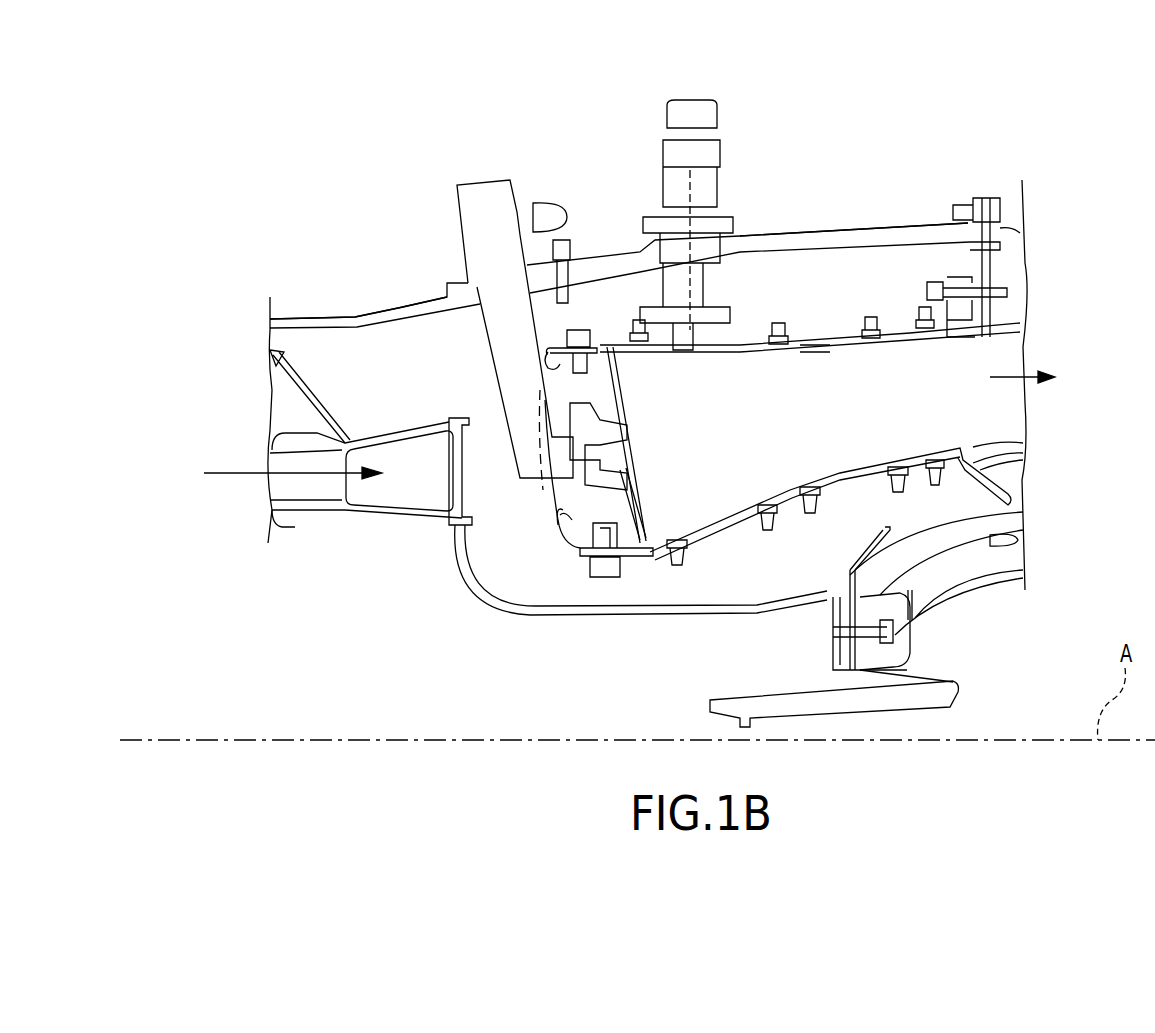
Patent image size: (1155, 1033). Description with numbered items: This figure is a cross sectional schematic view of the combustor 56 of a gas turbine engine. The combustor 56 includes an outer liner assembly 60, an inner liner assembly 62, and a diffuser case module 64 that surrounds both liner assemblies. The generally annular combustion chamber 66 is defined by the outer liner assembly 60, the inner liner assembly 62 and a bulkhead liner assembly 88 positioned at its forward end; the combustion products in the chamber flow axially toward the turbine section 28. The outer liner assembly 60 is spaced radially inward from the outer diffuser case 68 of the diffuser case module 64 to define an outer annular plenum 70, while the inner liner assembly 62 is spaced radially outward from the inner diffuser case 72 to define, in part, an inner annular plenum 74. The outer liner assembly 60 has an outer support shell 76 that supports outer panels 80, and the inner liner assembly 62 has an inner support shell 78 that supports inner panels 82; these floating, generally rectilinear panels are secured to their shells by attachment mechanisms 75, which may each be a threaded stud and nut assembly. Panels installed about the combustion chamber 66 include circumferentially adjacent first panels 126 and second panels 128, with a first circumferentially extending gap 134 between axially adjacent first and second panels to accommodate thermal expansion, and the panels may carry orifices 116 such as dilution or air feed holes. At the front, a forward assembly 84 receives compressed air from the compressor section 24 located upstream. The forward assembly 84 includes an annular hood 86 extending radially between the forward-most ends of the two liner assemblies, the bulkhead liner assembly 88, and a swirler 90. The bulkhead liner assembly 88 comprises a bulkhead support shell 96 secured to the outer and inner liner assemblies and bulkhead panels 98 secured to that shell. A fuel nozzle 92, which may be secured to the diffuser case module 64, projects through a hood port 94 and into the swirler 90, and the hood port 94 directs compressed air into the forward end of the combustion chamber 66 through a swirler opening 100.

The compressor section 24 is at (177, 491).
The turbine section 28 is at (1108, 396).
The combustor 56 is at (933, 152).
The outer liner assembly 60 is at (828, 320).
The inner liner assembly 62 is at (781, 520).
The diffuser case module 64 is at (873, 227).
The combustion chamber 66 is at (852, 423).
The outer diffuser case 68 is at (760, 233).
The outer annular plenum 70 is at (766, 292).
The inner diffuser case 72 is at (617, 620).
The inner annular plenum 74 is at (750, 595).
The attachment mechanism 75 is at (940, 482).
The outer support shell 76 is at (370, 314).
The inner support shell 78 is at (863, 487).
The outer panel 80 is at (422, 293).
The inner panel 82 is at (710, 523).
The forward assembly 84 is at (544, 566).
The annular hood 86 is at (560, 523).
The bulkhead liner assembly 88 is at (645, 386).
The swirler 90 is at (637, 470).
The fuel nozzle 92 is at (510, 268).
The hood port 94 is at (553, 513).
The bulkhead support shell 96 is at (570, 540).
The bulkhead panel 98 is at (640, 505).
The swirler opening 100 is at (630, 438).
The orifice 116 is at (827, 347).
The first panel 126 is at (760, 360).
The second panel 128 is at (860, 340).
The first circumferentially extending gap 134 is at (773, 350).